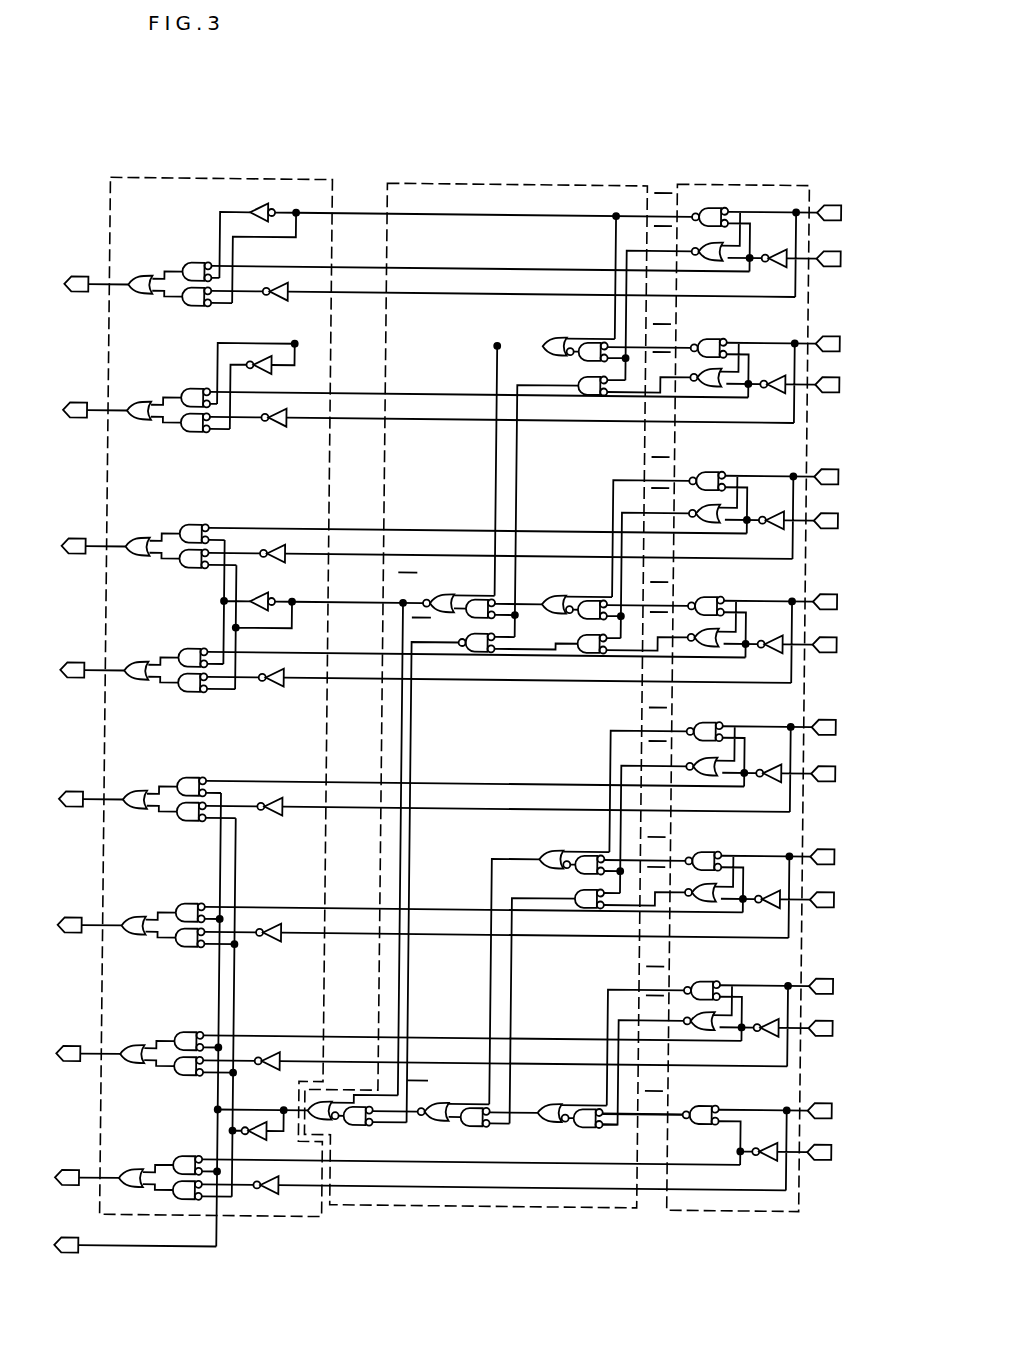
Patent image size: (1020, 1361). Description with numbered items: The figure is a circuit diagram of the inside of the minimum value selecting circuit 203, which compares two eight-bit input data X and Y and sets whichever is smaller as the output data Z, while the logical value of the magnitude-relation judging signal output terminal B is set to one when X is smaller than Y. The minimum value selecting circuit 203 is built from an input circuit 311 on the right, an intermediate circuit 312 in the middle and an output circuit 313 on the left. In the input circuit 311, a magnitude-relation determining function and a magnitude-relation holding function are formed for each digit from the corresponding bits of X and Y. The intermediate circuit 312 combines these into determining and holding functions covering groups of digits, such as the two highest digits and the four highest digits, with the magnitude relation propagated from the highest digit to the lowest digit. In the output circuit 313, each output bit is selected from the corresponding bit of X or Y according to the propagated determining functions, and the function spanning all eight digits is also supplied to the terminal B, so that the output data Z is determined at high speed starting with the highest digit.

The minimum value selecting circuit 203 is at (662, 1298).
The input circuit 311 is at (710, 1212).
The intermediate circuit 312 is at (477, 1208).
The output circuit 313 is at (262, 1222).